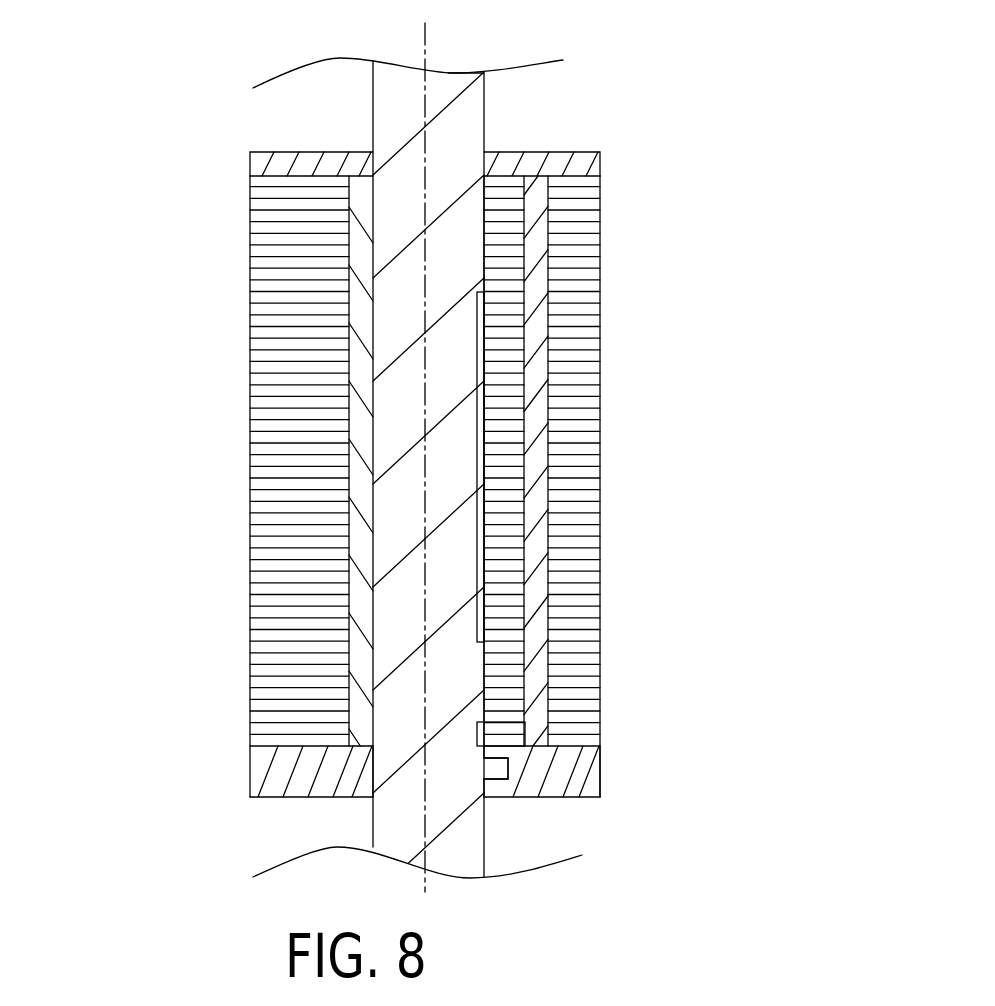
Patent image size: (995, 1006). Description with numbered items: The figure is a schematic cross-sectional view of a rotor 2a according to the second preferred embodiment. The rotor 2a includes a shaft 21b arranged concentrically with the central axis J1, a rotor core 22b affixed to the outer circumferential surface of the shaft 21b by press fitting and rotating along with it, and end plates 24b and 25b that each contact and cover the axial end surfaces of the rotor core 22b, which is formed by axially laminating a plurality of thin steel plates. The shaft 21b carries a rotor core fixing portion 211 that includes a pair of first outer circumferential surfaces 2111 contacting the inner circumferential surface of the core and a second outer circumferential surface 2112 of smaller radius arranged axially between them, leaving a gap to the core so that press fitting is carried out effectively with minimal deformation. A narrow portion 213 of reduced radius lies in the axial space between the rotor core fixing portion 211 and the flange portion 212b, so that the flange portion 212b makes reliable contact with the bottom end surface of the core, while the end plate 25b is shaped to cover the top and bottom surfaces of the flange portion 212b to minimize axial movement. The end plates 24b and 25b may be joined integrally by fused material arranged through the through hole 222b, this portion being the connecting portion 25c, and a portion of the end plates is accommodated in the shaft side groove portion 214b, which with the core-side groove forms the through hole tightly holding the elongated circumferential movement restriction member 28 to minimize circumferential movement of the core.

The central axis J1 is at (425, 58).
The shaft 21b is at (465, 122).
The rotor 2a is at (222, 200).
The end plate 24b is at (583, 163).
The circumferential movement restriction member 28 is at (363, 302).
The shaft side groove portion 214b is at (373, 203).
The rotor core 22b is at (617, 237).
The through hole 222b is at (550, 617).
The rotor core fixing portion 211 is at (673, 461).
The first outer circumferential surfaces 2111 is at (478, 238).
The second outer circumferential surface 2112 is at (482, 402).
The connecting portion 25c is at (535, 295).
The narrow portion 213 is at (478, 733).
The end plate 25b is at (585, 770).
The flange portion 212b is at (508, 769).